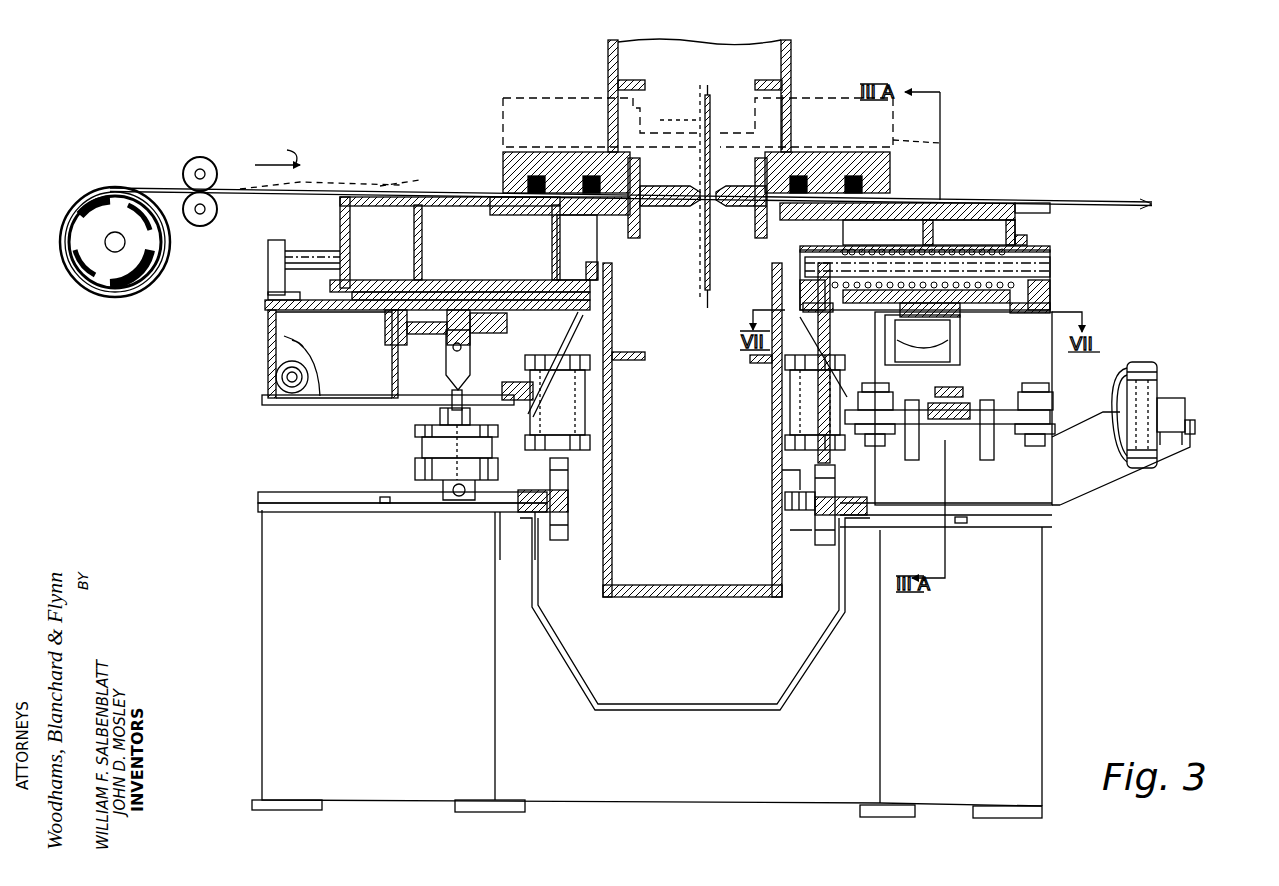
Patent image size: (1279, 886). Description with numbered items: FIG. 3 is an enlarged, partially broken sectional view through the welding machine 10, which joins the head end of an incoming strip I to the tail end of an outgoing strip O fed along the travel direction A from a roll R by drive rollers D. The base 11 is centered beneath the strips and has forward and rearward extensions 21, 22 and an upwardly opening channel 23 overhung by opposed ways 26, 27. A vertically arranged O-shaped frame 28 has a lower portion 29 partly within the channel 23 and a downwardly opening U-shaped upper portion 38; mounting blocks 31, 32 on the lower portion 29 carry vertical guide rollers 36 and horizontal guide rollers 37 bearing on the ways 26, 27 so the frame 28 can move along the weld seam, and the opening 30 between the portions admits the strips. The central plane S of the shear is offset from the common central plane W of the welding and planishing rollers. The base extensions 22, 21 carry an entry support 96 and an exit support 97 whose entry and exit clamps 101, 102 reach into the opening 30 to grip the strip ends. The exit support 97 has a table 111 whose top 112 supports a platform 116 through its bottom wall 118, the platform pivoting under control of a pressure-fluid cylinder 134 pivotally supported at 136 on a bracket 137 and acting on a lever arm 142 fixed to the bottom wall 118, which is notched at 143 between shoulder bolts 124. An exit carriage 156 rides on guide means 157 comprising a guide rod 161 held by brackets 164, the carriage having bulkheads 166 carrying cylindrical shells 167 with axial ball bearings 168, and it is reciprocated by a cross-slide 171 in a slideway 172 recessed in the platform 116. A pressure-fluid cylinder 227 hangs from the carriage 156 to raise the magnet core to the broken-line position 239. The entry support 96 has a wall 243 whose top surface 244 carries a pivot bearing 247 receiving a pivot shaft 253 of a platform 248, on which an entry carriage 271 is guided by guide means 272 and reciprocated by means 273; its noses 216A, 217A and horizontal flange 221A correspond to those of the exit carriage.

The welding machine 10 is at (1064, 592).
The base 11 is at (708, 806).
The forward extension 21 is at (1030, 690).
The rearward extension 22 is at (262, 620).
The channel 23 is at (690, 712).
The way 26 is at (532, 500).
The way 27 is at (853, 520).
The O-shaped frame 28 is at (794, 93).
The lower portion 29 is at (716, 598).
The opening 30 is at (788, 100).
The mounting block 31 is at (590, 531).
The mounting block 32 is at (790, 538).
The vertical guide rollers 36 is at (823, 542).
The horizontal guide rollers 37 is at (783, 501).
The upper portion 38 is at (609, 66).
The entry support 96 is at (262, 348).
The exit support 97 is at (1122, 312).
The entry clamp 101 is at (540, 140).
The exit clamp 102 is at (880, 130).
The table 111 is at (996, 496).
The top 112 is at (902, 440).
The platform 116 is at (963, 408).
The bottom wall 118 is at (1050, 420).
The shoulder bolts 124 is at (1048, 397).
The pressure-fluid cylinder 134 is at (1150, 380).
The pivot 136 is at (1186, 432).
The bracket 137 is at (1104, 480).
The lever arm 142 is at (943, 420).
The notch 143 is at (986, 382).
The carriage 156 is at (990, 188).
The guide means 157 is at (1062, 263).
The guide rod 161 is at (927, 271).
The bracket 164 is at (1052, 298).
The bulkheads 166 is at (1046, 206).
The cylindrical shells 167 is at (941, 246).
The axial bearings 168 is at (1030, 250).
The cross-slide 171 is at (910, 318).
The slideway 172 is at (898, 340).
The nose 216A is at (652, 184).
The nose 217A is at (680, 210).
The horizontal flange 221A is at (551, 381).
The pressure fluid cylinder 227 is at (824, 363).
The raised position 239 is at (936, 135).
The wall 243 is at (402, 468).
The top surface 244 is at (350, 402).
The pivot bearing 247 is at (287, 388).
The platform 248 is at (290, 332).
The pivot shaft 253 is at (302, 382).
The entry carriage 271 is at (460, 252).
The guide means 272 is at (312, 232).
The reciprocation means 273 is at (400, 240).
The outgoing strip O is at (1080, 203).
The roll R is at (103, 265).
The drive rollers D is at (190, 160).
The direction of strip travel A is at (277, 153).
The incoming strip I is at (345, 167).
The central plane of the shear S is at (698, 85).
The common central plane W is at (712, 126).